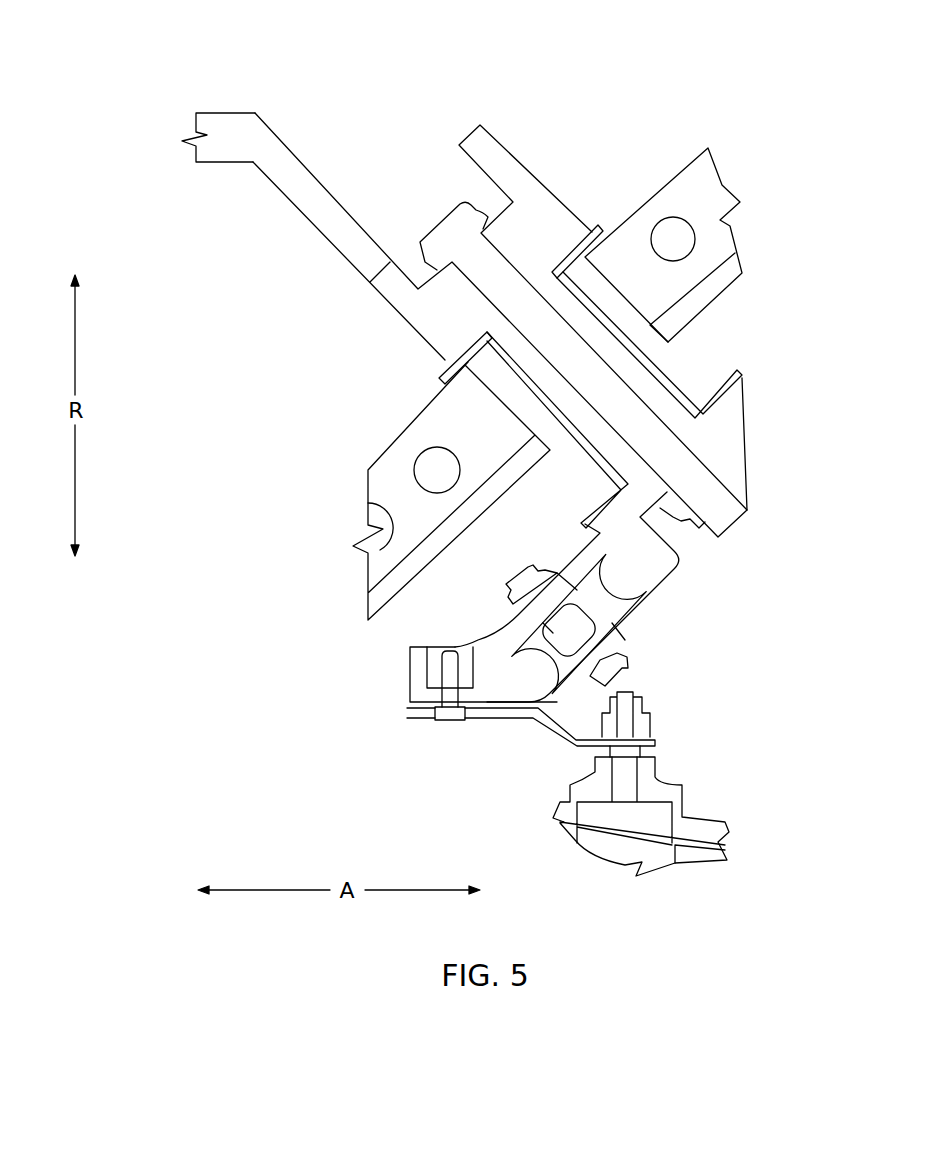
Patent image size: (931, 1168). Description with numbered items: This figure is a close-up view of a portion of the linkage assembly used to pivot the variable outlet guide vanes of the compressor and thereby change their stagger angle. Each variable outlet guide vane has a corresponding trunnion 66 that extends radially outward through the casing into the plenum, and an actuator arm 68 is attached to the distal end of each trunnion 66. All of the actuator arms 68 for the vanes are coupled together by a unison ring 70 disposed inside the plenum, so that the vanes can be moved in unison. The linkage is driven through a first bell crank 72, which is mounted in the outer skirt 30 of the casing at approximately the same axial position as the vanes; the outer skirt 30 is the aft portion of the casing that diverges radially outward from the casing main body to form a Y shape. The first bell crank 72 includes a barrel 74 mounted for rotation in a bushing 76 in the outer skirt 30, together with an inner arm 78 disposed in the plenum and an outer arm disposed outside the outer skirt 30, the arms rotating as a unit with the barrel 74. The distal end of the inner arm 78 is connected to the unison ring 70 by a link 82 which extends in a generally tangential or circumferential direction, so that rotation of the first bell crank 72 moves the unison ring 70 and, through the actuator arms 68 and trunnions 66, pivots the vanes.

The first bell crank 72 is at (434, 78).
The outer skirt 30 is at (705, 198).
The barrel 74 is at (630, 368).
The bushing 76 is at (467, 352).
The inner arm 78 is at (665, 575).
The link 82 is at (573, 627).
The unison ring 70 is at (418, 670).
The actuator arm 68 is at (545, 720).
The trunnion 66 is at (624, 768).